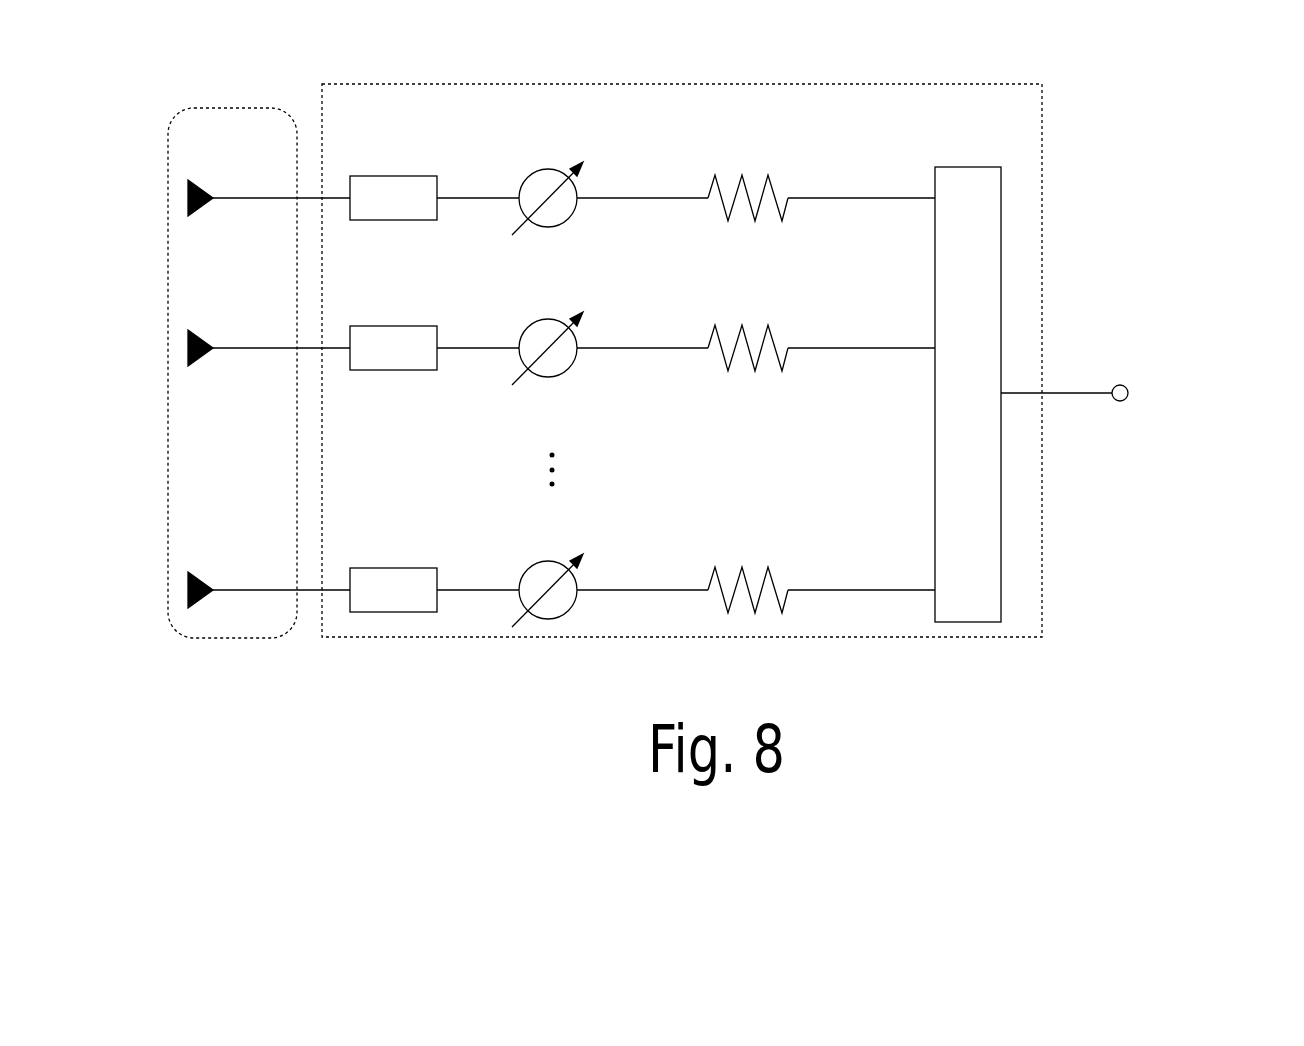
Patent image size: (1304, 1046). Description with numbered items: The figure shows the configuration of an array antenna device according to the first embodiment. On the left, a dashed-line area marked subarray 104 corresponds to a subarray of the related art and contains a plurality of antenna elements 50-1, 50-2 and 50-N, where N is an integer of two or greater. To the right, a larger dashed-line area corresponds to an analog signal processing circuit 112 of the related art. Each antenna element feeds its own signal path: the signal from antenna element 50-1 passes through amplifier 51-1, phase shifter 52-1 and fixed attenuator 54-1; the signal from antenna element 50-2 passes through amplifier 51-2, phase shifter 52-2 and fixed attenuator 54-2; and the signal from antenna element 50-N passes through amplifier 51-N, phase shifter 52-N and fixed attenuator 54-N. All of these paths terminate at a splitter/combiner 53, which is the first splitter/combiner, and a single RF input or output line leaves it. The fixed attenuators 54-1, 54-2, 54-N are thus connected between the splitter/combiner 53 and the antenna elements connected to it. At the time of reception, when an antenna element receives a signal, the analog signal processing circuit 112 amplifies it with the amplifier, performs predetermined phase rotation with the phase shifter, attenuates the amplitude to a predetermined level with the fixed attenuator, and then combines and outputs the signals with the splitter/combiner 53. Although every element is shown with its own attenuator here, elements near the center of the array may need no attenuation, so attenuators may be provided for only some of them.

The subarray 104 is at (243, 106).
The analog signal processing circuit 112 is at (955, 83).
The antenna element 50-1 is at (200, 188).
The antenna element 50-2 is at (200, 338).
The antenna element 50-N is at (200, 580).
The amplifier 51-1 is at (398, 177).
The amplifier 51-2 is at (398, 327).
The amplifier 51-N is at (398, 569).
The phase shifter 52-1 is at (552, 170).
The phase shifter 52-2 is at (552, 320).
The phase shifter 52-N is at (552, 562).
The fixed attenuator 54-1 is at (768, 175).
The fixed attenuator 54-2 is at (768, 325).
The fixed attenuator 54-N is at (768, 567).
The splitter/combiner 53 is at (965, 167).